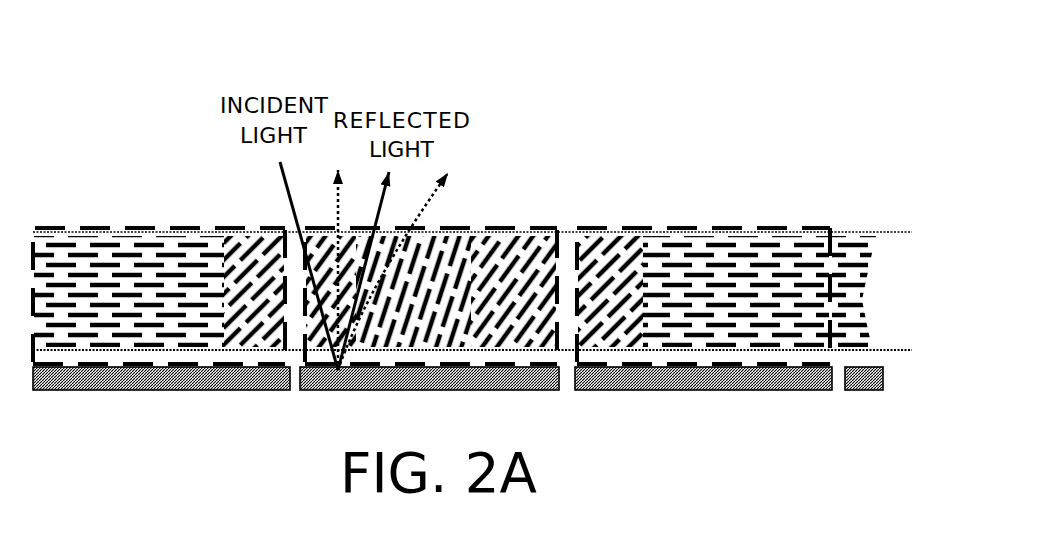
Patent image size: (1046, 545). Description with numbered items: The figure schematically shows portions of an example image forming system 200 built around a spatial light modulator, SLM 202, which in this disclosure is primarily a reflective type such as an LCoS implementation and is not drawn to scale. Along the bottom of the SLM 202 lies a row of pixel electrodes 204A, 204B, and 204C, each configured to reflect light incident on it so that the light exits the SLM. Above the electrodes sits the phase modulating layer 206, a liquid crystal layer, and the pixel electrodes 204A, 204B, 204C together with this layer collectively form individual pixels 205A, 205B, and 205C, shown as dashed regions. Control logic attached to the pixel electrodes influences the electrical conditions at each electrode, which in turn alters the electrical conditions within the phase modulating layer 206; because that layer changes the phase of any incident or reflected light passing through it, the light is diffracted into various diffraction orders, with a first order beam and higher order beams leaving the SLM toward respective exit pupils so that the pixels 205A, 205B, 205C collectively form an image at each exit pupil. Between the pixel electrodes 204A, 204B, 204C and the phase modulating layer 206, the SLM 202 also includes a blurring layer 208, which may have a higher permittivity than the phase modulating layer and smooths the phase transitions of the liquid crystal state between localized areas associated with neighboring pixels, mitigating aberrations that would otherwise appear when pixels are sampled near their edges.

The image forming system 200 is at (103, 33).
The spatial light modulator 202 is at (127, 212).
The pixel electrode 204A is at (83, 392).
The pixel electrode 204B is at (330, 392).
The pixel electrode 204C is at (592, 392).
The pixel 205A is at (187, 227).
The pixel 205B is at (477, 227).
The pixel 205C is at (742, 225).
The phase modulating layer 206 is at (842, 233).
The blurring layer 208 is at (875, 357).